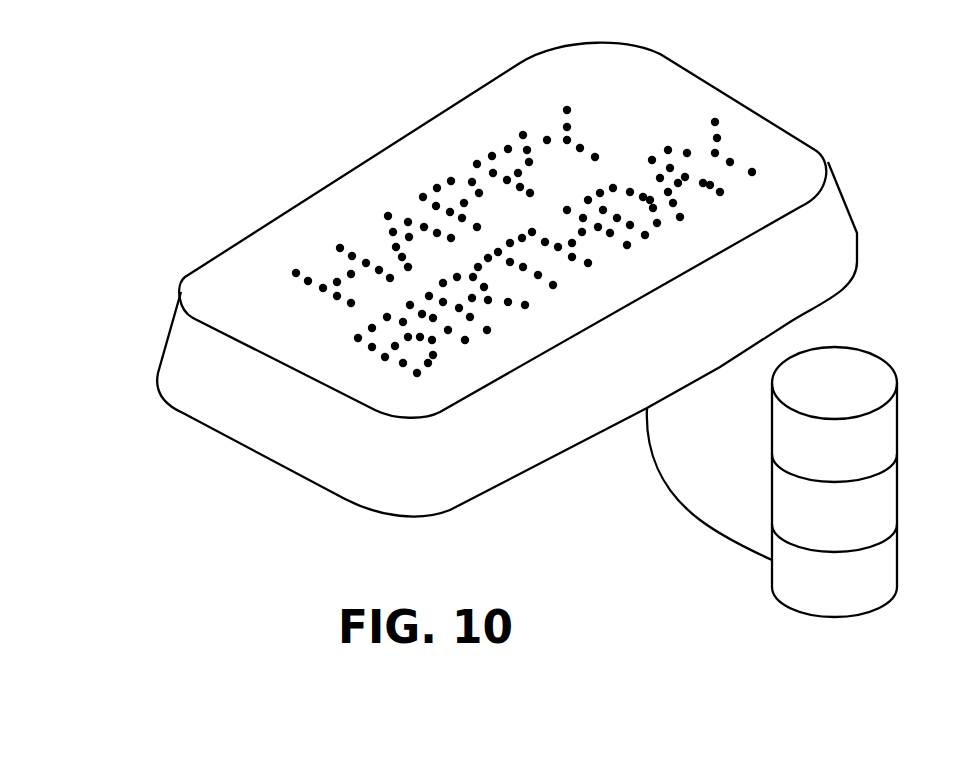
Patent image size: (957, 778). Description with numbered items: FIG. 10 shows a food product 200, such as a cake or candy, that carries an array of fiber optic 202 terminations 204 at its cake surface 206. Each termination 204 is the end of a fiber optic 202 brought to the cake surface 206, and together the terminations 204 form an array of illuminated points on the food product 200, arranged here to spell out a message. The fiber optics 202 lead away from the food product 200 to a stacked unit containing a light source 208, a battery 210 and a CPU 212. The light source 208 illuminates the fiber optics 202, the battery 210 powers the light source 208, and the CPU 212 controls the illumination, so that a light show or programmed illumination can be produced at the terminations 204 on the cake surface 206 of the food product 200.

The food product 200 is at (823, 245).
The fiber optic 202 is at (667, 487).
The termination 204 is at (297, 272).
The cake surface 206 is at (703, 100).
The light source 208 is at (868, 595).
The battery 210 is at (866, 525).
The CPU 212 is at (857, 458).